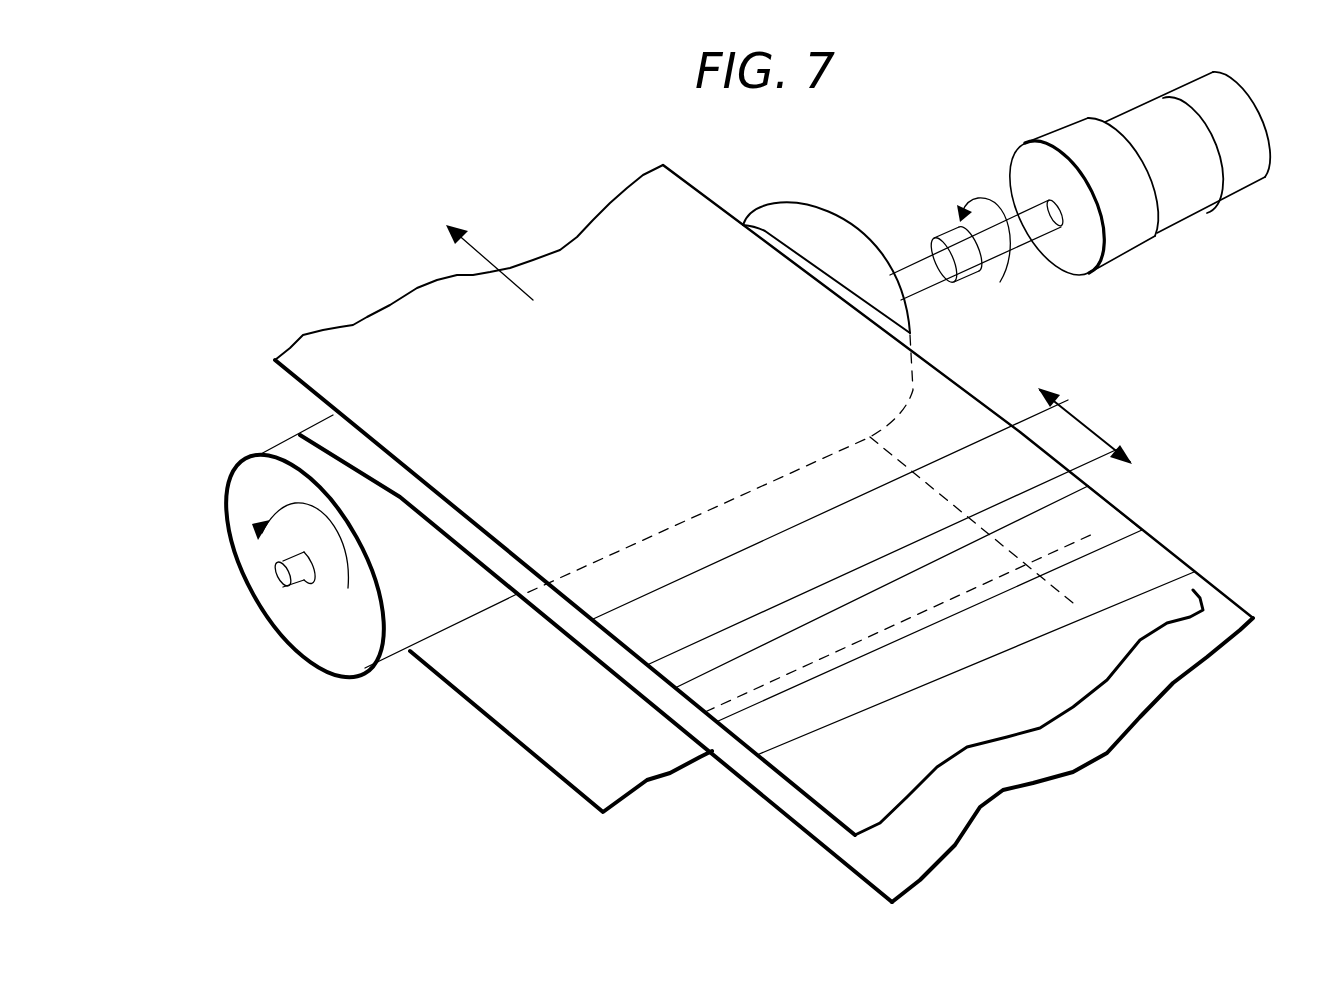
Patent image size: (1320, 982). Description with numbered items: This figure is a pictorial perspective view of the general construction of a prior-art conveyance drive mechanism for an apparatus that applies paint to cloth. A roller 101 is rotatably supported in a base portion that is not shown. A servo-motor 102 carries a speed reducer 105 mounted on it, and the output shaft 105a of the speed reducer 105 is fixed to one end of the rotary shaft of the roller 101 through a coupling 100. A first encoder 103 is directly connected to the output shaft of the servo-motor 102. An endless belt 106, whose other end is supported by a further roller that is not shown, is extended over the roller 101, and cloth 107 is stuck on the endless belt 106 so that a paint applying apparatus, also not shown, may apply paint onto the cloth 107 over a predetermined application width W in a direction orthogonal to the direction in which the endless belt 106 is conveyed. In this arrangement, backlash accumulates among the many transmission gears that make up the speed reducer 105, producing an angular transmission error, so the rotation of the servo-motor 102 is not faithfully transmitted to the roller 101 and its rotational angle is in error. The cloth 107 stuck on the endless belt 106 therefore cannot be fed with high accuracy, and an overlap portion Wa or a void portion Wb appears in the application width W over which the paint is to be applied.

The coupling 100 is at (950, 233).
The roller 101 is at (242, 487).
The servo-motor 102 is at (1201, 203).
The first encoder 103 is at (1253, 174).
The speed reducer 105 is at (1133, 242).
The output shaft 105a is at (1040, 222).
The endless belt 106 is at (775, 238).
The cloth 107 is at (679, 199).
The application width W is at (1085, 426).
The overlap portion Wa is at (1103, 537).
The void portion Wb is at (683, 662).